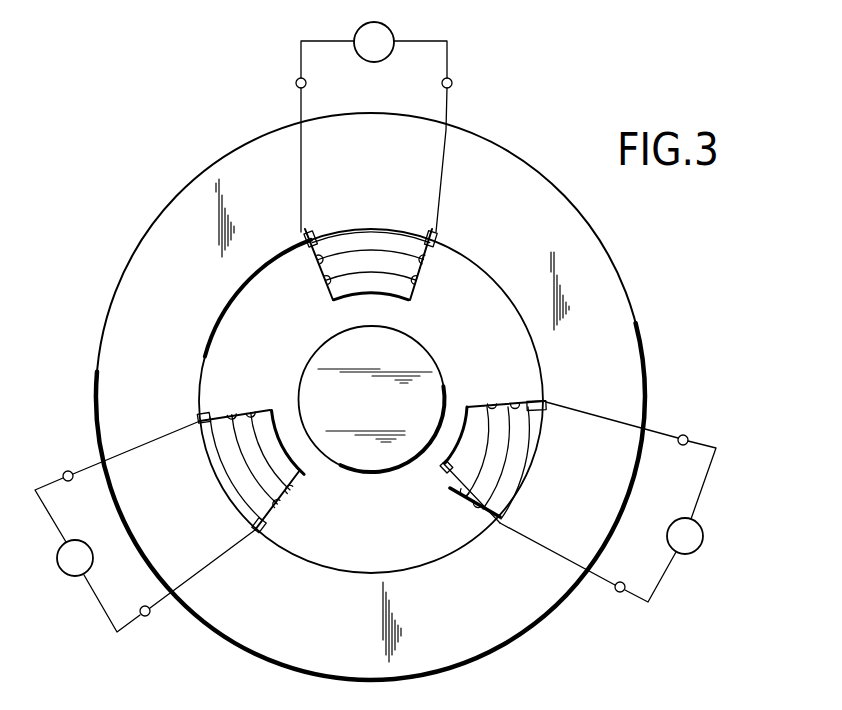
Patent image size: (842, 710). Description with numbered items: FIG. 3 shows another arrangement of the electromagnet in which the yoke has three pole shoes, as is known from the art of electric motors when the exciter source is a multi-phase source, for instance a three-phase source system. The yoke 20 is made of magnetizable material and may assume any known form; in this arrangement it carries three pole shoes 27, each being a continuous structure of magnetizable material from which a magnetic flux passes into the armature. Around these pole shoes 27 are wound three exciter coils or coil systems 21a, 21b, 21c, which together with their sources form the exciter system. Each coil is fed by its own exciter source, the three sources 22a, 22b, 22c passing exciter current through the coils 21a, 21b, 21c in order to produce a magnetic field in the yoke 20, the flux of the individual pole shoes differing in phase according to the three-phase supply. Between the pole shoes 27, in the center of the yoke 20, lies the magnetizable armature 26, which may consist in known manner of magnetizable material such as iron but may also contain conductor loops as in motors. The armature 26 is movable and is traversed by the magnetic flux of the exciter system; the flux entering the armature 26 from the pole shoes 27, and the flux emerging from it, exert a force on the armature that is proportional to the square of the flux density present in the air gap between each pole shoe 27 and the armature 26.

The yoke 20 is at (522, 607).
The exciter coil 21a is at (283, 500).
The exciter coil 21b is at (511, 403).
The exciter coil 21c is at (323, 280).
The exciter source 22a is at (66, 566).
The exciter source 22b is at (703, 523).
The exciter source 22c is at (372, 57).
The armature 26 is at (425, 362).
The pole shoes 27 is at (418, 298).